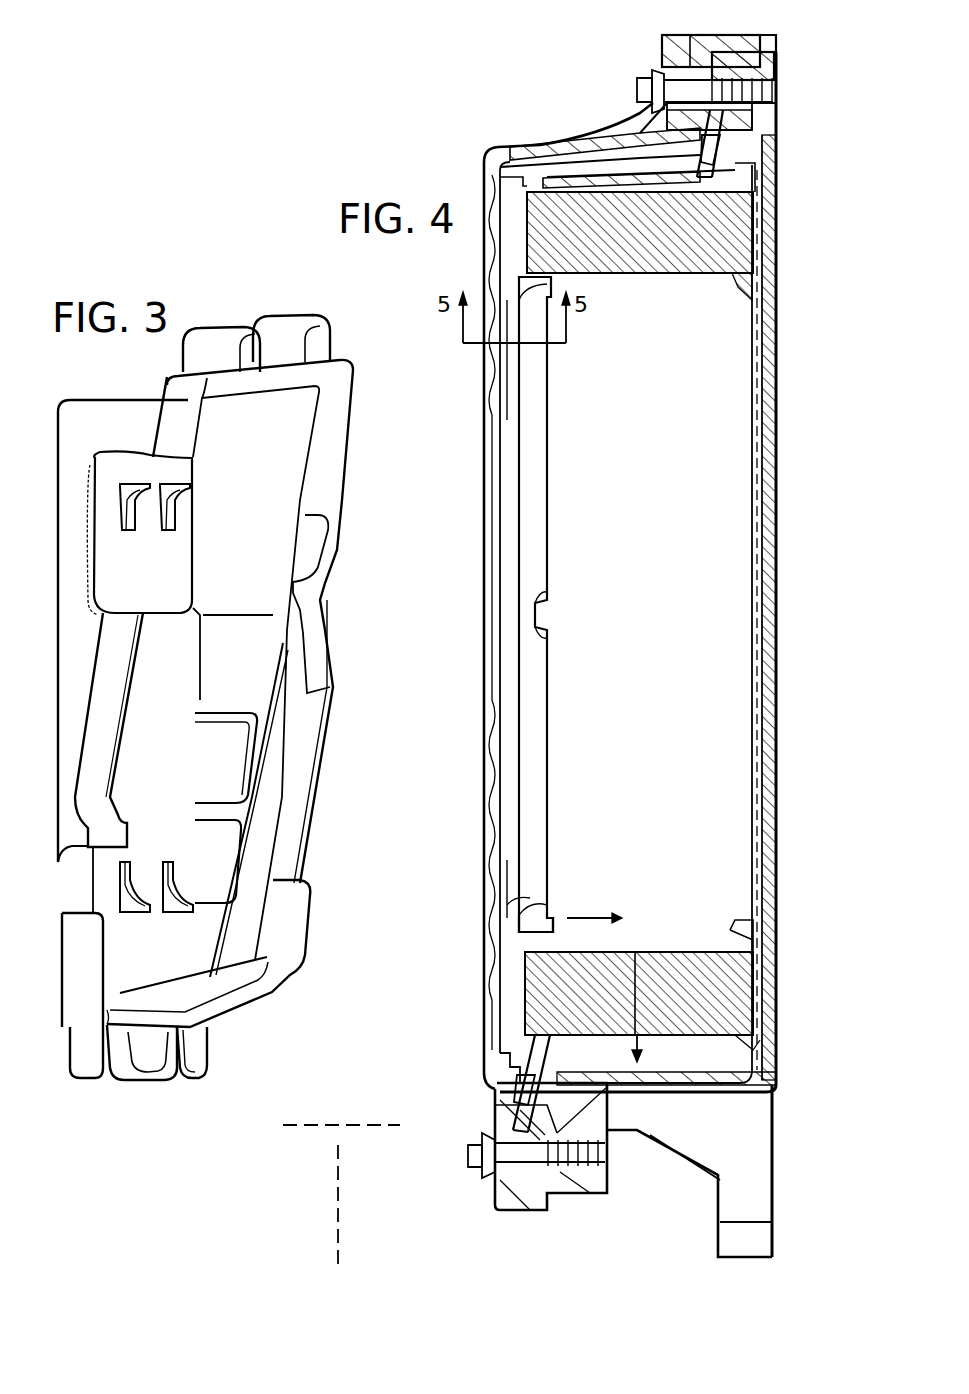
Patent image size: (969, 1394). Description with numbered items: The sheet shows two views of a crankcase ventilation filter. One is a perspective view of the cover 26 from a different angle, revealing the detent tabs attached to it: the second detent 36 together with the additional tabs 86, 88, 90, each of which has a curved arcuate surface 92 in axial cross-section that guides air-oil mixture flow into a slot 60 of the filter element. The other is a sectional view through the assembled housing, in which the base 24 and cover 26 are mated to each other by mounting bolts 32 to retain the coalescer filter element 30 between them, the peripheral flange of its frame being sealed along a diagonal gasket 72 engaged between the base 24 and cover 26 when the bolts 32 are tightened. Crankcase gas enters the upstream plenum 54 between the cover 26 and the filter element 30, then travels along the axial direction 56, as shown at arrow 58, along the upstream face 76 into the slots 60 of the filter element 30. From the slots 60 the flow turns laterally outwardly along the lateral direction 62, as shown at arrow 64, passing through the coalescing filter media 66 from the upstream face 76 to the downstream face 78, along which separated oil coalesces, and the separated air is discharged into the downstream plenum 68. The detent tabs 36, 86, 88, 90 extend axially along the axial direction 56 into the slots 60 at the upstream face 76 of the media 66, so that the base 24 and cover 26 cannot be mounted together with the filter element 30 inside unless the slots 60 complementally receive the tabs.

In FIG. 4, the base 24 is at (776, 192).
In FIG. 4, the cover 26 is at (484, 1052).
In FIG. 4, the coalescer filter element 30 is at (507, 183).
In FIG. 4, the mounting bolts 32 is at (637, 88).
In FIG. 3, the second detent 36 is at (120, 495).
In FIG. 3, the upstream plenum 54 is at (178, 769).
In FIG. 4, the upstream plenum 54 is at (490, 748).
In FIG. 3, the axial direction 56 is at (306, 1125).
In FIG. 4, the arrow 58 is at (590, 910).
In FIG. 4, the slots 60 is at (660, 602).
In FIG. 3, the lateral direction 62 is at (338, 1212).
In FIG. 4, the arrow 64 is at (632, 1045).
In FIG. 4, the coalescing filter media 66 is at (735, 997).
In FIG. 4, the downstream plenum 68 is at (689, 1071).
In FIG. 4, the diagonal gasket 72 is at (716, 143).
In FIG. 4, the upstream face 76 is at (668, 950).
In FIG. 4, the downstream face 78 is at (713, 1040).
In FIG. 3, the tab 86 is at (190, 498).
In FIG. 3, the tab 88 is at (128, 912).
In FIG. 3, the tab 90 is at (172, 912).
In FIG. 3, the curved arcuate surface 92 is at (145, 520).
In FIG. 4, the curved arcuate surface 92 is at (547, 895).